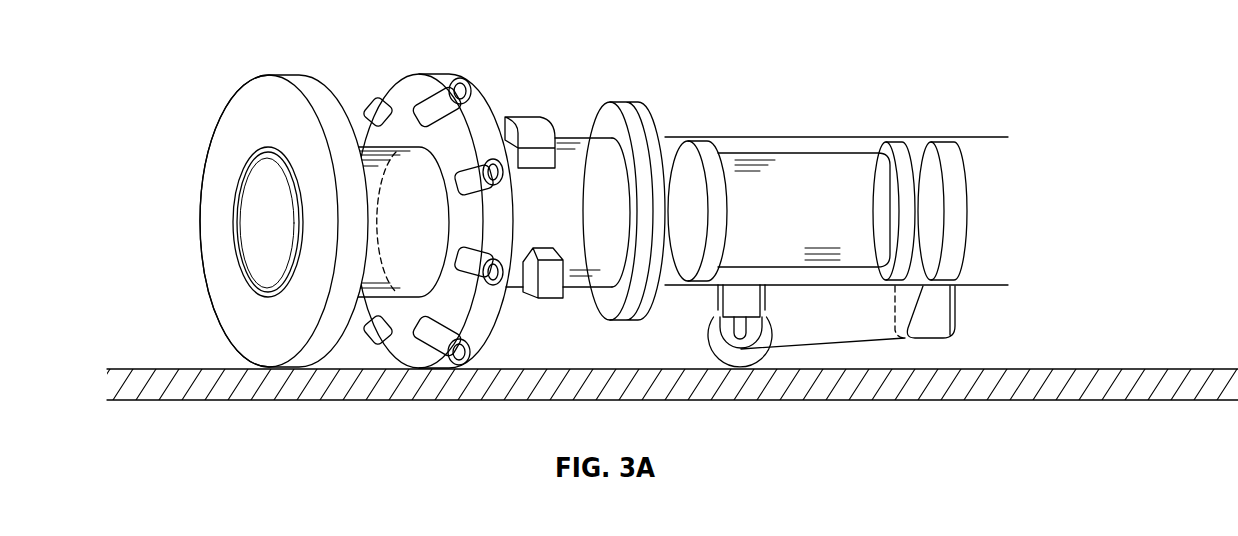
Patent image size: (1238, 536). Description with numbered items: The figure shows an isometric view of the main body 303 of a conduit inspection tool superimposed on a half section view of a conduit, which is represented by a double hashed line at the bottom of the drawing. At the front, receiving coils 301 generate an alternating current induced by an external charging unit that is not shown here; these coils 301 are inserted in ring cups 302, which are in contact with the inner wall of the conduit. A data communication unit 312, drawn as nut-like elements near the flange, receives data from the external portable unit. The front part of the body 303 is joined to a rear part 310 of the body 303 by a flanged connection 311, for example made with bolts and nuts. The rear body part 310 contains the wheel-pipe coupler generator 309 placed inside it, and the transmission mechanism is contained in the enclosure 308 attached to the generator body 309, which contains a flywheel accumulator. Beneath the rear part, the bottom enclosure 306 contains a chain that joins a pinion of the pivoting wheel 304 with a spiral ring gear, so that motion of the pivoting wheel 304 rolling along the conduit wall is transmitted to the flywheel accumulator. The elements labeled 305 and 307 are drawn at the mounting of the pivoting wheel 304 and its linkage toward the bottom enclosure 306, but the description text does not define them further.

The receiving coils 301 is at (420, 85).
The ring cups 302 is at (218, 311).
The main body 303 is at (178, 443).
The pivoting wheel 304 is at (747, 370).
The caster mount block 305 is at (722, 320).
The bottom enclosure 306 is at (878, 347).
The link arm 307 is at (767, 306).
The enclosure 308 is at (975, 173).
The wheel-pipe coupler generator 309 is at (876, 117).
The rear part 310 is at (787, 108).
The flanged connection 311 is at (645, 78).
The data communication unit 312 is at (527, 90).